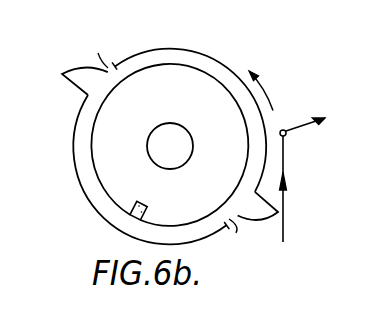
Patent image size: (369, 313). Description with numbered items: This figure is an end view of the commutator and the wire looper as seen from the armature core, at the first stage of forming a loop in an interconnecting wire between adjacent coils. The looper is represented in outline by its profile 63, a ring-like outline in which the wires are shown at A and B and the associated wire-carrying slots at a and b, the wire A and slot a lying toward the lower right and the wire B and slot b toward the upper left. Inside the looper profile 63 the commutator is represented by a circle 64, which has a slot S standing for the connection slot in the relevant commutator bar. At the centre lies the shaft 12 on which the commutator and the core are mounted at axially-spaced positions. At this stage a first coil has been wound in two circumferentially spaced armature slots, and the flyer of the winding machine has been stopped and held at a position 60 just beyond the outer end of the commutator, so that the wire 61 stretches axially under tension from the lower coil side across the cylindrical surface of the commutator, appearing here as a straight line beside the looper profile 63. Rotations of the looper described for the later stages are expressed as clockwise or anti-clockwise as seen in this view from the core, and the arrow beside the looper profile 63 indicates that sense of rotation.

The shaft 12 is at (190, 153).
The flyer position 60 is at (291, 135).
The wire 61 is at (284, 195).
The looper profile 63 is at (204, 54).
The commutator circle 64 is at (153, 66).
The slot S is at (135, 205).
The wire A is at (251, 221).
The wire B is at (73, 68).
The wire-carrying slot a is at (234, 235).
The wire-carrying slot b is at (100, 53).